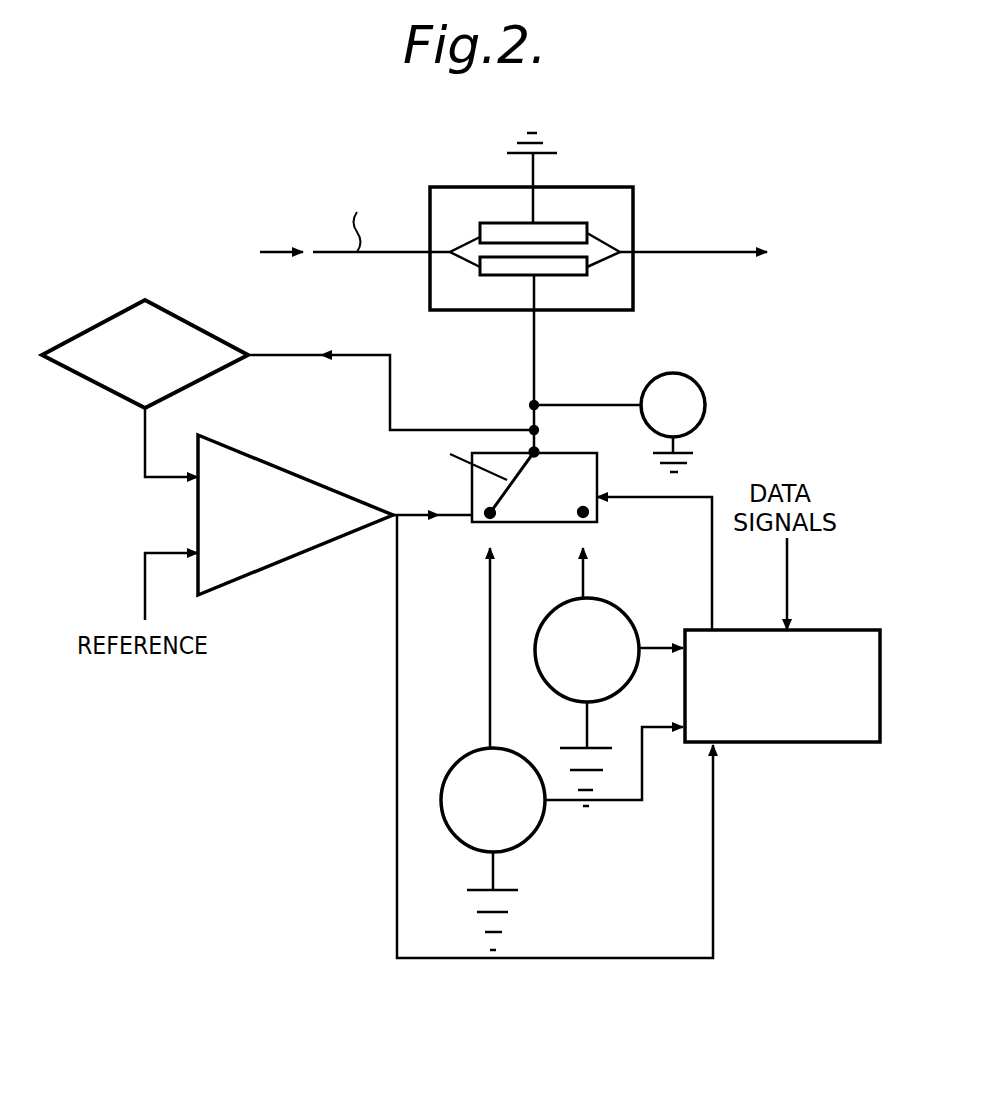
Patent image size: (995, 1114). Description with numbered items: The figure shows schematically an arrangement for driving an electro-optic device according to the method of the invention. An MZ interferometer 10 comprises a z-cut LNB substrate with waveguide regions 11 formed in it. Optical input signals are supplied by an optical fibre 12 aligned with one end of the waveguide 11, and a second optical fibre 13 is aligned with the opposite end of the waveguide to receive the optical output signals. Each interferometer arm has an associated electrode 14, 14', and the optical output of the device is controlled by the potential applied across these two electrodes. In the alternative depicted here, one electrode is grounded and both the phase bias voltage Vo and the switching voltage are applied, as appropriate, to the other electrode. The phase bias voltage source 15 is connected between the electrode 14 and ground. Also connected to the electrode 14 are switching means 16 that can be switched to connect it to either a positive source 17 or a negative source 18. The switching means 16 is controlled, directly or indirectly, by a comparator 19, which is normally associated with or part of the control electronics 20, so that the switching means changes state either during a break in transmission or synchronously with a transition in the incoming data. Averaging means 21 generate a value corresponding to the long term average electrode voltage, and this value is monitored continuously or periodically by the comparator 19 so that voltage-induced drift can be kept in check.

The MZ interferometer 10 is at (467, 200).
The waveguide regions 11 is at (607, 240).
The optical fibre 12 is at (355, 212).
The second optical fibre 13 is at (683, 248).
The electrode 14 is at (590, 280).
The electrode 14' is at (566, 183).
The phase bias voltage source 15 is at (690, 395).
The switching means 16 is at (512, 463).
The positive source 17 is at (482, 832).
The negative source 18 is at (557, 628).
The comparator 19 is at (310, 542).
The control electronics 20 is at (778, 728).
The averaging means 21 is at (178, 333).